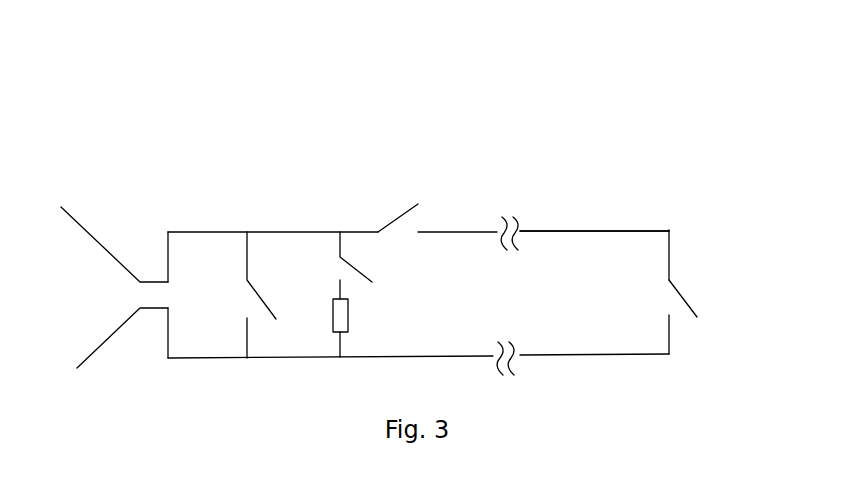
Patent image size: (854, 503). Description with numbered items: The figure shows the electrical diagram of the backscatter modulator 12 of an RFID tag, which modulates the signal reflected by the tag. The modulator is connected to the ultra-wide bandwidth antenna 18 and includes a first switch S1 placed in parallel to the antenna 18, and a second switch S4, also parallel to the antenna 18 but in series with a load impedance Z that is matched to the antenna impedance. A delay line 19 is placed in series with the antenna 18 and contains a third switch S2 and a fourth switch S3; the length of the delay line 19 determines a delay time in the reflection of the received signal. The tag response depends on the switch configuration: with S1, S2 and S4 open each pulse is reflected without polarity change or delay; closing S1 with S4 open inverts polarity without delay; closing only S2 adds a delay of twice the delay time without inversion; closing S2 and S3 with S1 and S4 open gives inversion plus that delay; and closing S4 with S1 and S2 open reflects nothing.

The backscatter modulator 12 is at (587, 123).
The second ultra-wide bandwidth antenna 18 is at (95, 243).
The delay line 19 is at (593, 228).
The first switch S1 is at (260, 292).
The third switch S2 is at (390, 220).
The fourth switch S3 is at (678, 295).
The second switch S4 is at (352, 262).
The load impedance Z is at (337, 322).